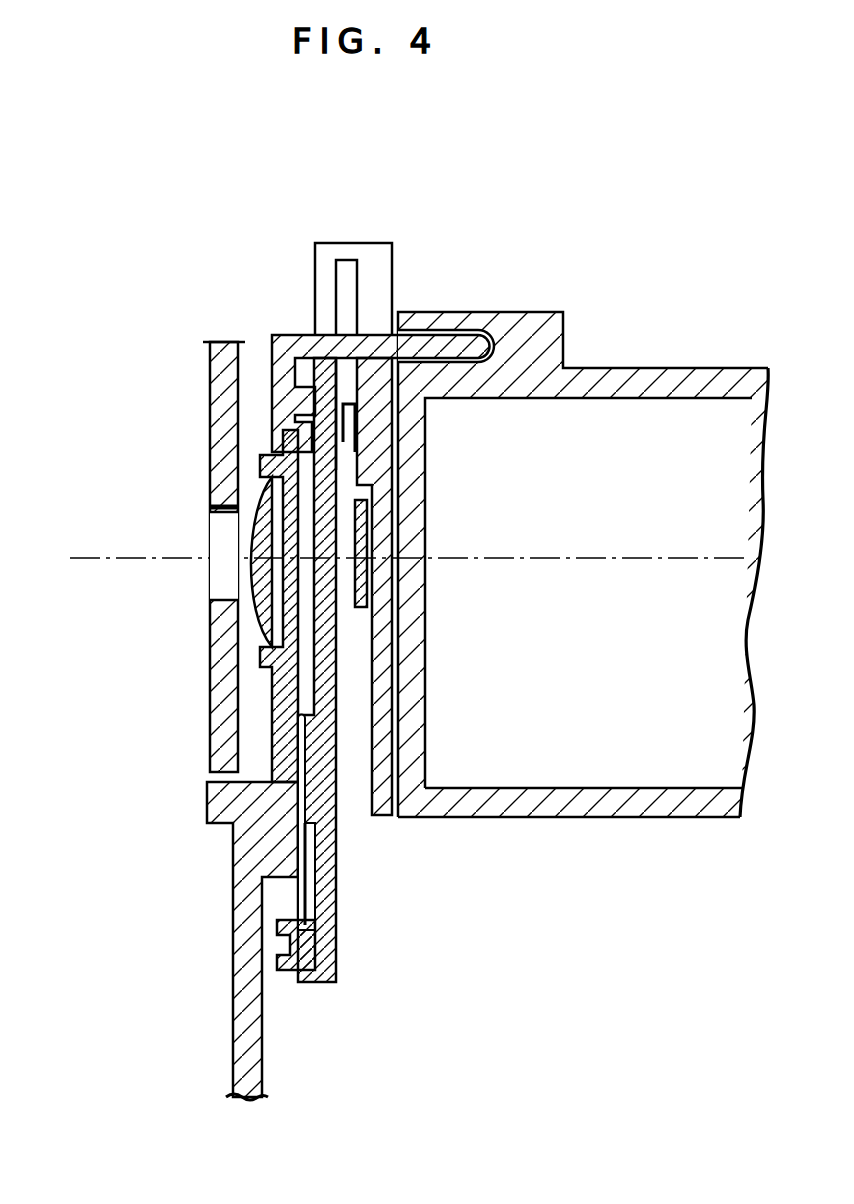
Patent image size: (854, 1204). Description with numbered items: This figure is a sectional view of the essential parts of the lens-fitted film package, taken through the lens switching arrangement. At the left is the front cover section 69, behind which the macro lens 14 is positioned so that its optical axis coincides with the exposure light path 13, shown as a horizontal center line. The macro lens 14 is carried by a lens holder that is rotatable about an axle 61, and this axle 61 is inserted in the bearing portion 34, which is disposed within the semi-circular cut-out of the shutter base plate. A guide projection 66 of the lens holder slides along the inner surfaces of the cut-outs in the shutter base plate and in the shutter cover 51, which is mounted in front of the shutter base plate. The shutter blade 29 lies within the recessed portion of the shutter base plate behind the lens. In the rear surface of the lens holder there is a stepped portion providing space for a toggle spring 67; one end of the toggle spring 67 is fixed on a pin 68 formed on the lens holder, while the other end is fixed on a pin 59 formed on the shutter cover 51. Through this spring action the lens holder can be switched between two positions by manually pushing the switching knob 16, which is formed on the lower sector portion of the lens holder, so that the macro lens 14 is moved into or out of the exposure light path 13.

The exposure light path 13 is at (118, 562).
The macro lens 14 is at (243, 548).
The switching knob 16 is at (207, 808).
The shutter blade 29 is at (378, 537).
The bearing portion 34 is at (450, 312).
The shutter cover 51 is at (351, 208).
The pin 59 is at (282, 972).
The axle 61 is at (283, 335).
The guide projection 66 is at (343, 438).
The toggle spring 67 is at (305, 905).
The pin 68 is at (300, 697).
The front cover section 69 is at (205, 420).